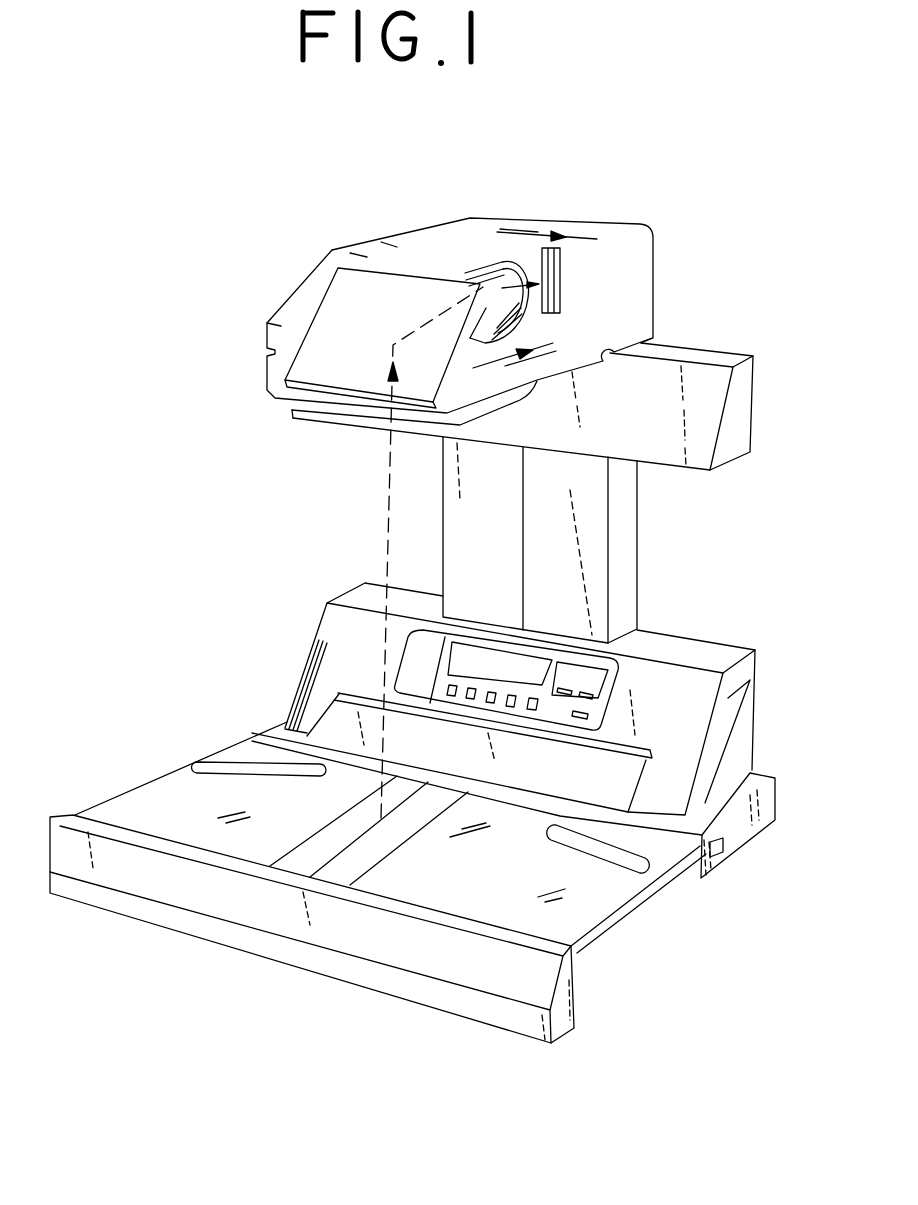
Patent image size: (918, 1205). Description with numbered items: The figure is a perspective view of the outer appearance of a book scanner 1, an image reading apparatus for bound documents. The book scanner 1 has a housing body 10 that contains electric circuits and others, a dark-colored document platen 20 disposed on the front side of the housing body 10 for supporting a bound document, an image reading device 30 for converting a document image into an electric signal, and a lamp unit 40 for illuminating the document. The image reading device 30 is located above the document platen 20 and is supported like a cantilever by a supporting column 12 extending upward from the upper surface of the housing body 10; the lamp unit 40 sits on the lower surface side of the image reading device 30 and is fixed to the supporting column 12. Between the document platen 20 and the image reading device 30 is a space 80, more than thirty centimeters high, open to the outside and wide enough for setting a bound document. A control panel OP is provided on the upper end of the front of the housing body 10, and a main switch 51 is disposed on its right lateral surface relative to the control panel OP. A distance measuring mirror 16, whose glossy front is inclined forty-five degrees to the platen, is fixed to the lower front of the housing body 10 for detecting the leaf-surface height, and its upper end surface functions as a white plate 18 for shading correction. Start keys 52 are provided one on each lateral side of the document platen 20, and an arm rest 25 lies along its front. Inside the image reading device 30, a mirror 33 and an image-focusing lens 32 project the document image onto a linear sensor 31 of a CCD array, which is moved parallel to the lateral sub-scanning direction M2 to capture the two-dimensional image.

The book scanner 1 is at (165, 131).
The housing body 10 is at (432, 811).
The supporting column 12 is at (628, 537).
The distance measuring mirror 16 is at (338, 733).
The white plate 18 is at (353, 690).
The document platen 20 is at (417, 836).
The arm rest 25 is at (227, 900).
The image reading device 30 is at (302, 281).
The linear sensor 31 is at (563, 281).
The lens 32 is at (490, 268).
The mirror 33 is at (340, 322).
The lamp unit 40 is at (743, 423).
The main switch 51 is at (723, 847).
The start keys 52 is at (238, 767).
The space 80 is at (357, 517).
The sub-scanning direction M2 is at (552, 218).
The control panel OP is at (618, 690).